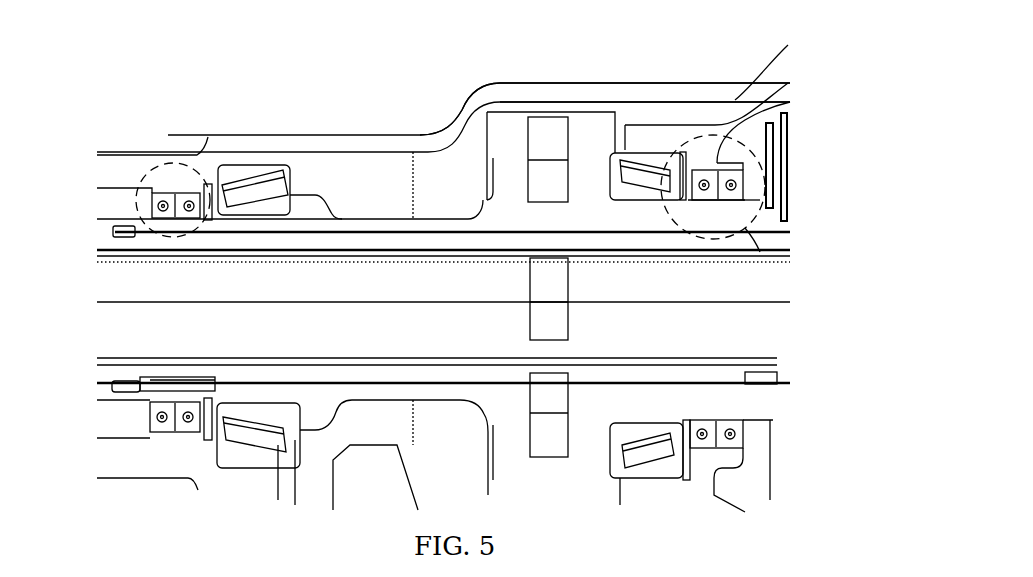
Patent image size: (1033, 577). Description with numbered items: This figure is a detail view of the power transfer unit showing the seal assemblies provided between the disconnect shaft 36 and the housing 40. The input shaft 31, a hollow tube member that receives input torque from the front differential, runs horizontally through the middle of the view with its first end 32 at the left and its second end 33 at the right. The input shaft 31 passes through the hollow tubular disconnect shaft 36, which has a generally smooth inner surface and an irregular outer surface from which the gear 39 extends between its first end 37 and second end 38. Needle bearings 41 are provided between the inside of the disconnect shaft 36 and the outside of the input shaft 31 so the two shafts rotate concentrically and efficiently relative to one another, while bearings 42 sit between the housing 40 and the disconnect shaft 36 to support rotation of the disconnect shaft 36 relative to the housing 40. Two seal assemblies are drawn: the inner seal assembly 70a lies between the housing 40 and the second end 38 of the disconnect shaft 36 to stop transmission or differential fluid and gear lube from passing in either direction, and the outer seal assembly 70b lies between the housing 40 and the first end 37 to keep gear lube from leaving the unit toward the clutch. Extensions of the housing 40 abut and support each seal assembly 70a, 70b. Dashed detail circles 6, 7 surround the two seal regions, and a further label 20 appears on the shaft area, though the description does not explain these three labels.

The detail circle of FIG. 6 is at (199, 160).
The detail circle of FIG. 7 is at (687, 142).
The shaft 20 is at (443, 286).
The input shaft 31 is at (360, 373).
The first end 32 is at (126, 241).
The second end 33 is at (729, 372).
The disconnect shaft 36 is at (545, 287).
The first end 37 is at (716, 213).
The second end 38 is at (130, 385).
The gear 39 is at (513, 122).
The housing 40 is at (388, 147).
The needle bearing 41 is at (180, 388).
The bearing 42 is at (262, 435).
The inner seal assembly 70a is at (174, 190).
The outer seal assembly 70b is at (708, 171).